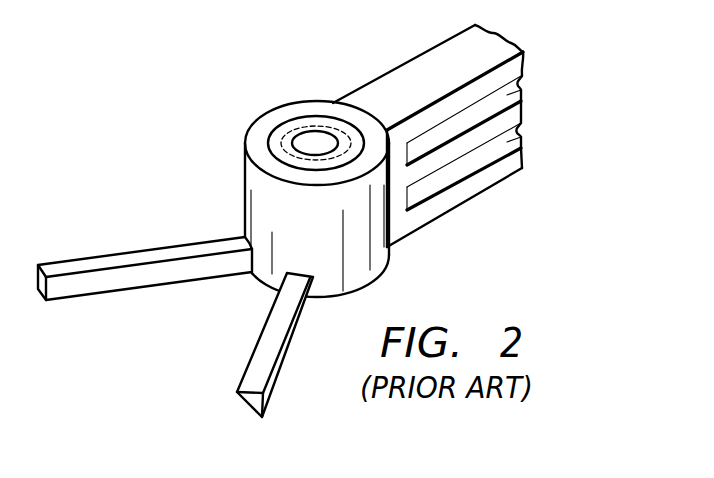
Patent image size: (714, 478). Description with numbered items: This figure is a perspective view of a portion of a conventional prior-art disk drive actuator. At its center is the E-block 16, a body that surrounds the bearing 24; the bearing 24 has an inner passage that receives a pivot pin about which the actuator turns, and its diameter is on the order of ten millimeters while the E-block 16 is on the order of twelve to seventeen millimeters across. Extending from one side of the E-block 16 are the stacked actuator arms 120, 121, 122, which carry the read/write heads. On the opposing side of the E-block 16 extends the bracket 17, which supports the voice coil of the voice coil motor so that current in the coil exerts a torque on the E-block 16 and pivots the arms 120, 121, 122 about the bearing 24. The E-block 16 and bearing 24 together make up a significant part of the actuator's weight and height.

The E-block 16 is at (313, 110).
The bearing 24 is at (288, 131).
The actuator arm 120 is at (523, 58).
The actuator arm 121 is at (523, 107).
The actuator arm 122 is at (523, 153).
The bracket 17 is at (75, 265).